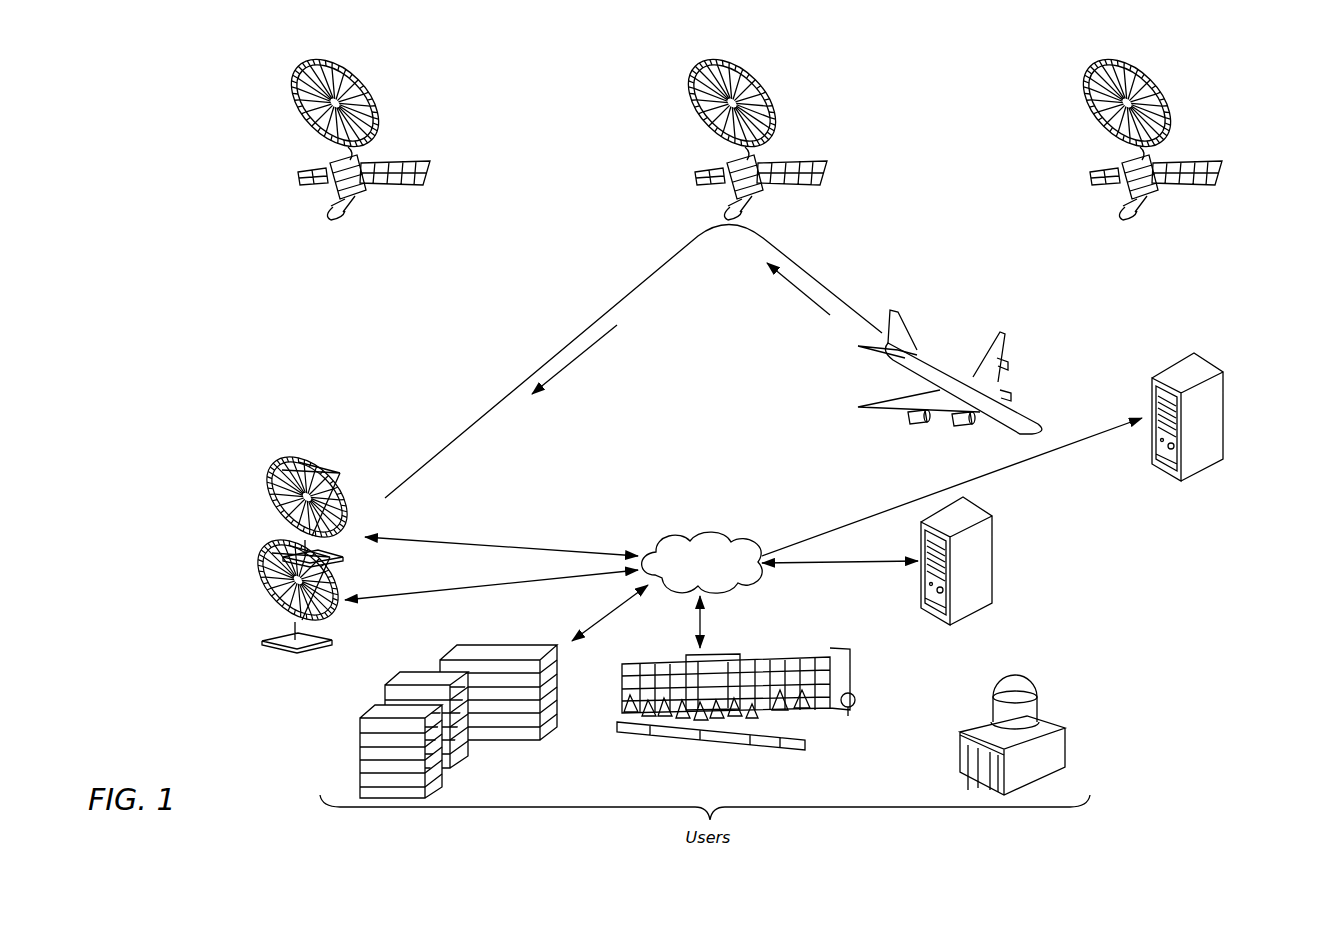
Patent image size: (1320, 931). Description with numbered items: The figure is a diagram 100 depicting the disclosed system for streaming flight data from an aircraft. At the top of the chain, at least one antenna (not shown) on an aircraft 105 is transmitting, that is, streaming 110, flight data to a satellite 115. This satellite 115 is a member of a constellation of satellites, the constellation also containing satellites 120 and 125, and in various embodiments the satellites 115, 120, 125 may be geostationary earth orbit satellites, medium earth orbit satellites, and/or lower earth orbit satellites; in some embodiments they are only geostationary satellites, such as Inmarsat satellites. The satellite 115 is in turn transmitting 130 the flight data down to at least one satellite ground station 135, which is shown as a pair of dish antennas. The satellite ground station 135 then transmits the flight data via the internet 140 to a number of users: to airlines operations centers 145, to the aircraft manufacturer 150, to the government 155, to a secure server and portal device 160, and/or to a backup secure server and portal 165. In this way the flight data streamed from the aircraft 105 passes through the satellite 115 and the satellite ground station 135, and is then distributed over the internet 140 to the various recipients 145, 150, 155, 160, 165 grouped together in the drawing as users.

The diagram 100 is at (188, 673).
The aircraft 105 is at (1020, 410).
The transmitting (streaming) of flight data 110 is at (802, 296).
The satellite 115 is at (700, 102).
The satellite 120 is at (303, 102).
The satellite 125 is at (1095, 102).
The transmitting of flight data 130 is at (592, 350).
The satellite ground station 135 is at (277, 455).
The internet 140 is at (688, 533).
The airlines operations centers 145 is at (360, 738).
The aircraft manufacturer 150 is at (690, 738).
The government 155 is at (1043, 718).
The secure server and portal device 160 is at (992, 566).
The backup secure server and portal 165 is at (1222, 372).